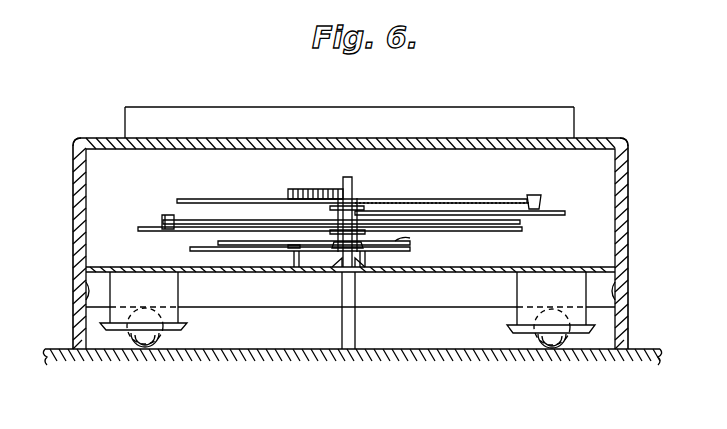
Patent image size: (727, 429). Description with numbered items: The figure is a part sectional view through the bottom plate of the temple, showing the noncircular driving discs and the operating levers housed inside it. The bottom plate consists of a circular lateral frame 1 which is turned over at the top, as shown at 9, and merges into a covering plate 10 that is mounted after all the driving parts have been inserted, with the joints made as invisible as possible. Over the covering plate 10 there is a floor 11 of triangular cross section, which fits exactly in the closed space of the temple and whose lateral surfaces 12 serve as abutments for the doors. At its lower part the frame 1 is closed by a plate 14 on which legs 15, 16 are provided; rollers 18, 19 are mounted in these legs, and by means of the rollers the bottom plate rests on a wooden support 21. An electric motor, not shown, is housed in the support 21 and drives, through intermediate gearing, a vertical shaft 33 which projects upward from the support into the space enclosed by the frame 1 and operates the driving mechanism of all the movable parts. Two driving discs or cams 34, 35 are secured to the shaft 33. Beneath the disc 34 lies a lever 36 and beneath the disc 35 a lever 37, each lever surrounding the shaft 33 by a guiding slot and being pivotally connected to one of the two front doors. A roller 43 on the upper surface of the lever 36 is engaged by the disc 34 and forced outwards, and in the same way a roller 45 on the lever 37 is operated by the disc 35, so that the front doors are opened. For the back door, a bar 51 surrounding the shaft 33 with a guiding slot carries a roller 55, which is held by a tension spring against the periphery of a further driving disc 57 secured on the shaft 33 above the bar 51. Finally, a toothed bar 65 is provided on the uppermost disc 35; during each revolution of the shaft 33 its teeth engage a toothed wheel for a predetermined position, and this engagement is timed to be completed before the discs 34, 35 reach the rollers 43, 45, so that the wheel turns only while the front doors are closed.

The lateral frame 1 is at (73, 238).
The turned-over top of frame 9 is at (96, 139).
The covering plate 10 is at (340, 140).
The floor 11 is at (231, 115).
The lateral surfaces 12 is at (124, 117).
The plate 14 is at (461, 272).
The leg 15 is at (187, 327).
The leg 16 is at (508, 329).
The roller 18 is at (151, 350).
The roller 19 is at (553, 351).
The support 21 is at (205, 352).
The vertical shaft 33 is at (349, 335).
The driving disc 34 is at (257, 225).
The driving disc 35 is at (258, 201).
The lever 36 is at (204, 232).
The lever 37 is at (535, 209).
The roller 43 is at (160, 221).
The roller 45 is at (546, 204).
The bar 51 is at (272, 272).
The roller 55 is at (298, 272).
The driving disc 57 is at (405, 241).
The toothed bar 65 is at (355, 190).